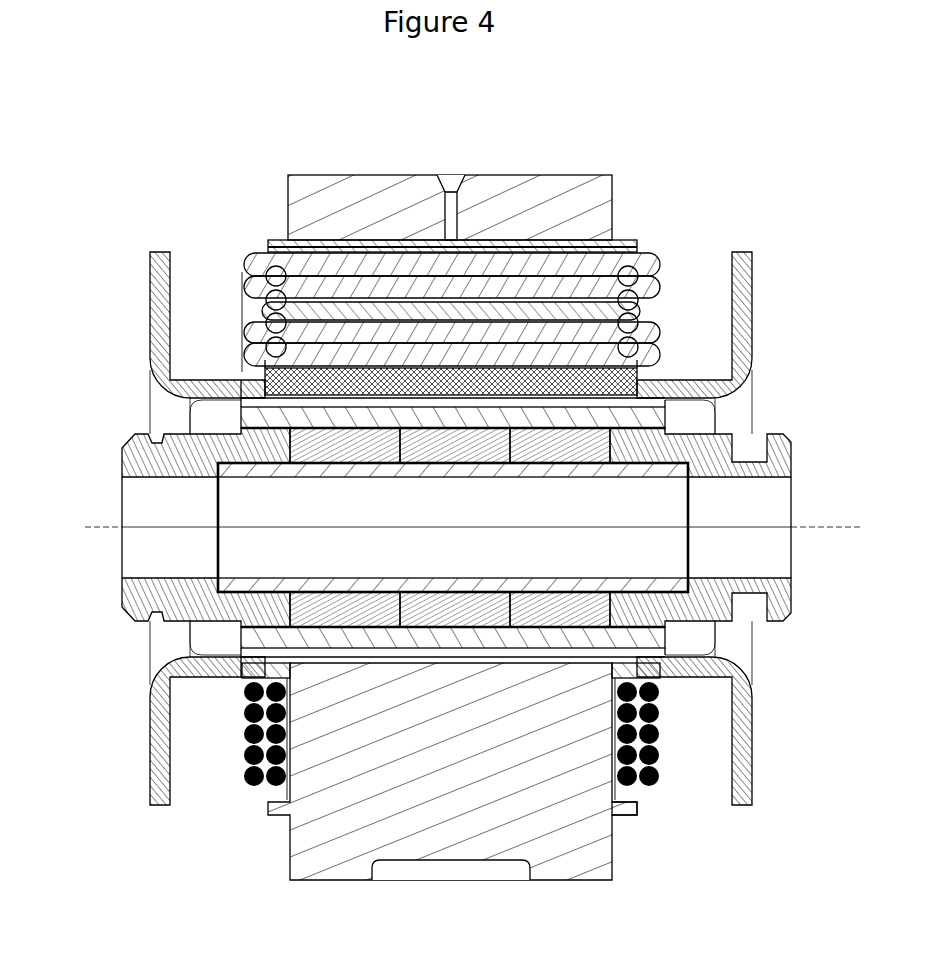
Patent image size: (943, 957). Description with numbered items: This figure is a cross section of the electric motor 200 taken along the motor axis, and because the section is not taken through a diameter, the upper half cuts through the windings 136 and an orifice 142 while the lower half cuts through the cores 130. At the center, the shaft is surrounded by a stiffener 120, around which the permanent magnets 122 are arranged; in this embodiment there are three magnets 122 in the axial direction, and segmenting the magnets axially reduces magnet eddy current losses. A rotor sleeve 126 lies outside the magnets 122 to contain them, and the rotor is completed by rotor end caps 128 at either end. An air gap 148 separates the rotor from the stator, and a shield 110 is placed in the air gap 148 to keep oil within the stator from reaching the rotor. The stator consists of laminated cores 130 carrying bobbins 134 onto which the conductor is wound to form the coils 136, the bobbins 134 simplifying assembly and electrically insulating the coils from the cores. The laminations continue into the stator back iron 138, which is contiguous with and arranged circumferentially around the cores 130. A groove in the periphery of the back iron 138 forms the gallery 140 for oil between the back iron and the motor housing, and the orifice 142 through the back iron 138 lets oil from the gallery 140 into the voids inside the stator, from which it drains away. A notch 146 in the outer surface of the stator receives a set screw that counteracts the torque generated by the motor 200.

The electric motor 200 is at (275, 123).
The shield 110 is at (153, 243).
The stiffener 120 is at (282, 472).
The magnets 122 is at (413, 443).
The rotor sleeve 126 is at (255, 420).
The rotor end caps 128 is at (133, 446).
The cores 130 is at (627, 250).
The bobbins 134 is at (623, 818).
The coils 136 is at (643, 263).
The stator back iron 138 is at (574, 221).
The gallery 140 is at (443, 177).
The orifice 142 is at (457, 180).
The notch 146 is at (500, 872).
The air gap 148 is at (655, 403).